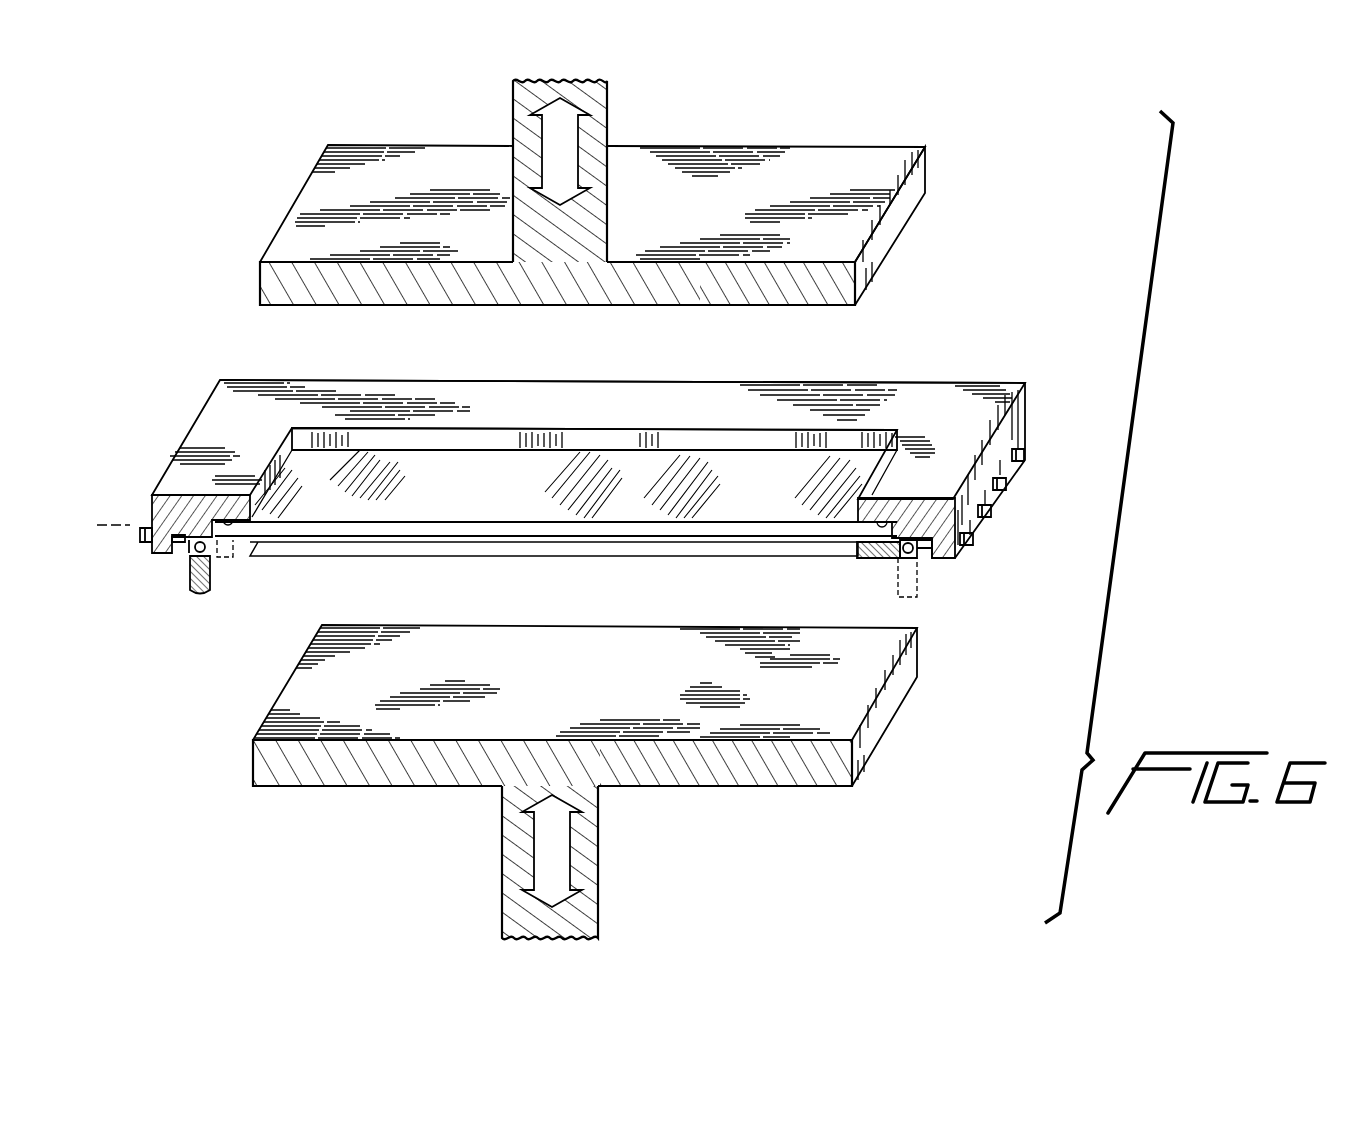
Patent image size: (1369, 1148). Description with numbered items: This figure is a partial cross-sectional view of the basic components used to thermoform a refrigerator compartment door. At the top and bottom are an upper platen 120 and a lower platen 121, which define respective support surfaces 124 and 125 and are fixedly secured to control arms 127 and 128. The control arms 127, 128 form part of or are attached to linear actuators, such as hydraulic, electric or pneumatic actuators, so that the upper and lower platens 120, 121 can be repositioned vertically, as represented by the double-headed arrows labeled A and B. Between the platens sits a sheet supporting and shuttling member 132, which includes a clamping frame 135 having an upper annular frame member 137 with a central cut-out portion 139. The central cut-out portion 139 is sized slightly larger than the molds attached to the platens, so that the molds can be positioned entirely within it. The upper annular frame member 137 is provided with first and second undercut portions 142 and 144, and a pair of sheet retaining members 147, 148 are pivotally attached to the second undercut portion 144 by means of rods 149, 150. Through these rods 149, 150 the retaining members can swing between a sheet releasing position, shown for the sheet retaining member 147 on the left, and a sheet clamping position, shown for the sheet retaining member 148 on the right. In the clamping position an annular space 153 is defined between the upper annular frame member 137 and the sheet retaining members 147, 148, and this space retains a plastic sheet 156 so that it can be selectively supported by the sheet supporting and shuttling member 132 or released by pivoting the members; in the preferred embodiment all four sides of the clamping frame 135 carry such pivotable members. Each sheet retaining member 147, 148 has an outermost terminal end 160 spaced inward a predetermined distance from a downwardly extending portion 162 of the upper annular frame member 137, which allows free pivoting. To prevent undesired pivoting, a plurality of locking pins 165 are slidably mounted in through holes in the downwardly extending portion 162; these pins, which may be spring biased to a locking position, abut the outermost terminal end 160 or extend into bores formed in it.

The upper platen 120 is at (890, 168).
The lower platen 121 is at (838, 702).
The support surface 124 is at (822, 310).
The support surface 125 is at (585, 682).
The control arm 127 is at (597, 100).
The control arm 128 is at (590, 847).
The sheet supporting and shuttling member 132 is at (187, 402).
The clamping frame 135 is at (1026, 381).
The upper annular frame member 137 is at (622, 400).
The central cut-out portion 139 is at (312, 440).
The first undercut portion 142 is at (225, 522).
The second undercut portion 144 is at (182, 553).
The sheet retaining member 147 is at (200, 597).
The sheet retaining member 148 is at (872, 560).
The rod 149 is at (203, 549).
The rod 150 is at (920, 557).
The annular space 153 is at (878, 527).
The plastic sheet 156 is at (556, 503).
The outermost terminal end 160 is at (920, 540).
The downwardly extending portion 162 is at (945, 560).
The locking pins 165 is at (991, 515).